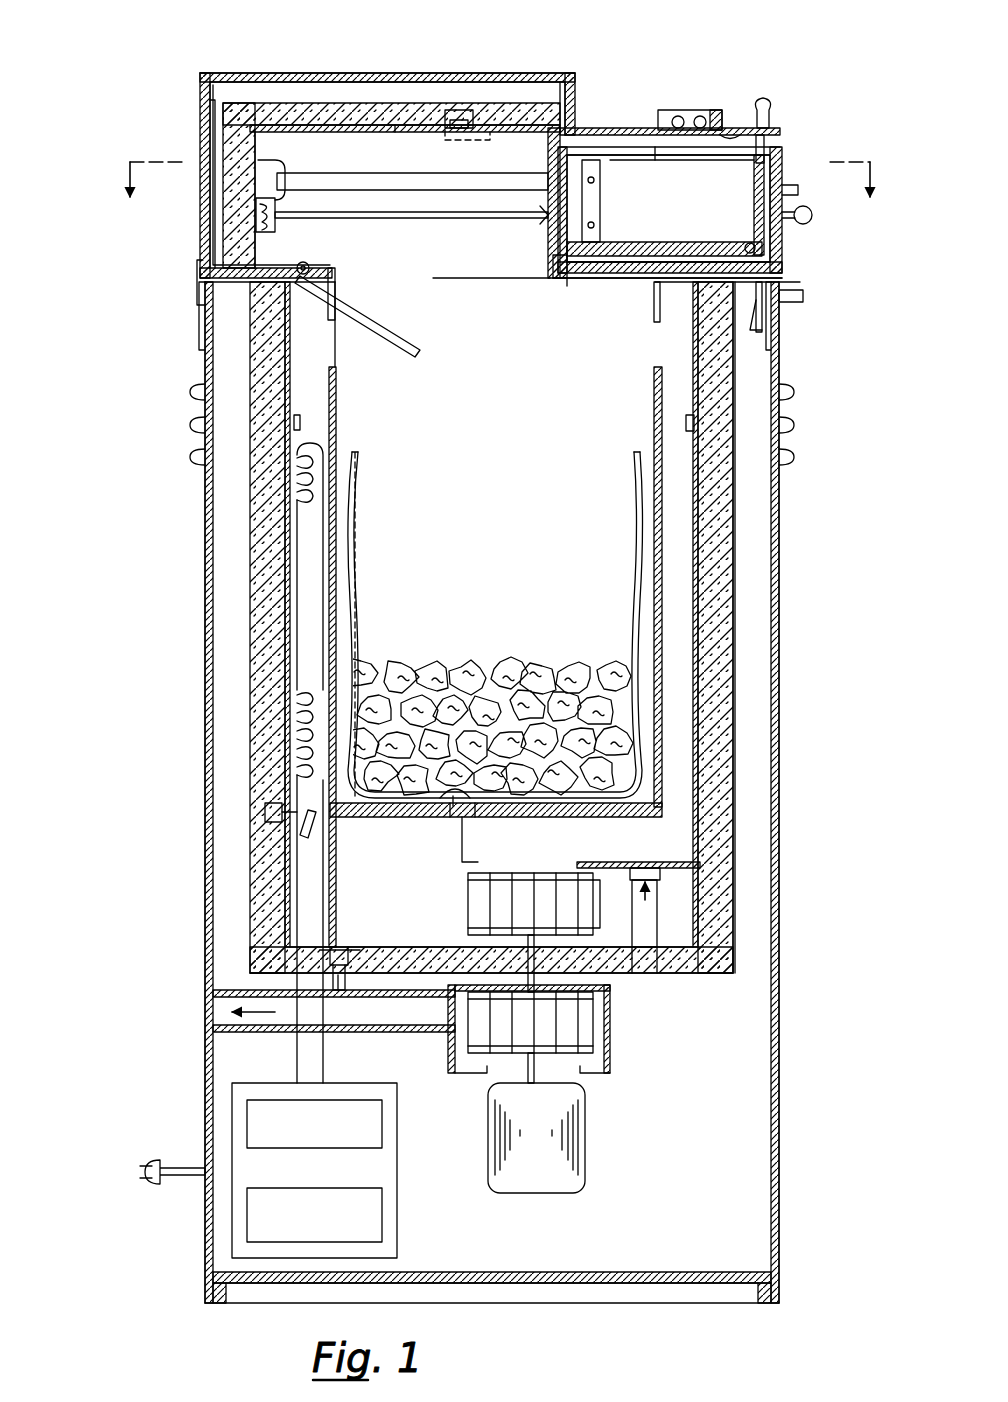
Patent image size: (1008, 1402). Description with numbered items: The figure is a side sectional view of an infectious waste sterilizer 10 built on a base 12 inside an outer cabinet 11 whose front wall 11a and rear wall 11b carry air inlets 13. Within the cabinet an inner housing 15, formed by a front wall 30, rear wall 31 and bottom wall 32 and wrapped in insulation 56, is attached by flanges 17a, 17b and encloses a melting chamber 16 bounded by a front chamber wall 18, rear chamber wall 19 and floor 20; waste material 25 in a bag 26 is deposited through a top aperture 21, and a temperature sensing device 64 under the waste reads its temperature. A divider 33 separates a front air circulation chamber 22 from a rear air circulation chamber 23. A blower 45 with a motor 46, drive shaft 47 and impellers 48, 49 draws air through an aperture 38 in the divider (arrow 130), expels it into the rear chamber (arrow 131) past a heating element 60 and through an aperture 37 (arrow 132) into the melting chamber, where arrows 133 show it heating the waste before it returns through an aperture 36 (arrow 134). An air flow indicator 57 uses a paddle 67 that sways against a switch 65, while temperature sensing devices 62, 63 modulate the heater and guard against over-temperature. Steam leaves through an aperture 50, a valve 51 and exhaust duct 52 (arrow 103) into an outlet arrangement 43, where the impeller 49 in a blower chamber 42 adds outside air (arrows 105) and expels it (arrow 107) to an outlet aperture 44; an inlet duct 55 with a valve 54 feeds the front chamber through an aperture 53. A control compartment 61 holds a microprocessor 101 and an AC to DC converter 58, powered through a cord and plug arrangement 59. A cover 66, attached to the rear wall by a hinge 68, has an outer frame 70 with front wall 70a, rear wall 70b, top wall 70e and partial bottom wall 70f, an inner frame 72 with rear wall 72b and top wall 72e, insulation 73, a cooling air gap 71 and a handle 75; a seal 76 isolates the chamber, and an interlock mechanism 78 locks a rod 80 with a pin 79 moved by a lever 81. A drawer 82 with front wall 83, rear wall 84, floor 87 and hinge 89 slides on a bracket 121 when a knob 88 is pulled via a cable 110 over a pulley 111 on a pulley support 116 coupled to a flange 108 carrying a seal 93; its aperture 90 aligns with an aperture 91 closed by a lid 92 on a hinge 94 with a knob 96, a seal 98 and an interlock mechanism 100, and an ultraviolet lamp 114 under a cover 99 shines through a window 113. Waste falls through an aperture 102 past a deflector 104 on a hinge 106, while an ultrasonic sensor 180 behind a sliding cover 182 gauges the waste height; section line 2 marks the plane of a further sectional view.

The infectious waste sterilizer 10 is at (172, 122).
The outer cabinet 11 is at (783, 618).
The front wall 11a is at (781, 545).
The rear wall 11b is at (204, 658).
The base 12 is at (688, 1290).
The inlets 13 is at (193, 392).
The inner housing 15 is at (692, 362).
The melting chamber 16 is at (486, 418).
The flange 17a is at (785, 338).
The flange 17b is at (199, 335).
The front chamber wall 18 is at (662, 512).
The rear chamber wall 19 is at (336, 435).
The floor 20 is at (480, 815).
The aperture 21 is at (488, 288).
The front air circulation chamber 22 is at (690, 749).
The rear air circulation chamber 23 is at (348, 879).
The waste material 25 is at (500, 660).
The bag 26 is at (356, 550).
The front wall 30 is at (693, 625).
The rear wall 31 is at (270, 575).
The bottom wall 32 is at (392, 948).
The divider 33 is at (598, 860).
The aperture 36 is at (640, 338).
The aperture 37 is at (320, 372).
The aperture 38 is at (514, 870).
The blower chamber 42 is at (600, 1025).
The outlet arrangement 43 is at (441, 1033).
The outlet aperture 44 is at (210, 1000).
The blower 45 is at (587, 1157).
The motor 46 is at (485, 1170).
The drive shaft 47 is at (600, 985).
The impeller 48 is at (598, 912).
The impeller 49 is at (610, 1064).
The aperture 50 is at (340, 945).
The valve 51 is at (348, 948).
The exhaust duct 52 is at (350, 988).
The aperture 53 is at (648, 865).
The valve 54 is at (657, 875).
The inlet duct 55 is at (650, 915).
The insulation 56 is at (737, 800).
The air flow indicator 57 is at (293, 818).
The AC to DC converter 58 is at (332, 1188).
The power cord and plug arrangement 59 is at (172, 1160).
The electrical heating element 60 is at (298, 490).
The control compartment 61 is at (398, 1215).
The temperature sensing device 62 is at (300, 413).
The temperature sensing device 63 is at (688, 432).
The temperature sensing device 64 is at (440, 785).
The switch 65 is at (268, 803).
The cover 66 is at (385, 70).
The paddle 67 is at (312, 825).
The hinge 68 is at (200, 275).
The outer frame 70 is at (222, 72).
The front wall 70a is at (782, 258).
The rear wall 70b is at (205, 208).
The top wall 70e is at (550, 78).
The partial bottom wall 70f is at (620, 285).
The air gap 71 is at (224, 100).
The inner frame 72 is at (308, 122).
The rear wall 72b is at (270, 145).
The top wall 72e is at (352, 122).
The insulation 73 is at (270, 100).
The handle 75 is at (798, 188).
The seal 76 is at (312, 270).
The interlock mechanism 78 is at (757, 300).
The pin 79 is at (800, 285).
The extending rod 80 is at (758, 335).
The interlock lever 81 is at (805, 296).
The drawer 82 is at (668, 208).
The front wall 83 is at (752, 200).
The rear wall 84 is at (600, 195).
The floor 87 is at (635, 255).
The knob 88 is at (803, 225).
The hinge 89 is at (745, 245).
The aperture 90 is at (690, 160).
The aperture 91 is at (640, 147).
The lid 92 is at (770, 135).
The seal 93 is at (565, 285).
The hinge 94 is at (590, 128).
The knob 96 is at (763, 96).
The seal 98 is at (610, 125).
The cover 99 is at (680, 108).
The interlock mechanism 100 is at (782, 165).
The microprocessor 101 is at (268, 1150).
The aperture 102 is at (455, 266).
The arrow 103 is at (318, 1021).
The deflector 104 is at (415, 292).
The arrows 105 is at (483, 1078).
The hinge 106 is at (320, 262).
The arrow 107 is at (397, 1012).
The flange 108 is at (548, 150).
The cable 110 is at (488, 212).
The pulley 111 is at (278, 220).
The window 113 is at (738, 130).
The ultraviolet lamp 114 is at (713, 108).
The pulley support 116 is at (271, 170).
The bracket 121 is at (344, 182).
The arrow 130 is at (580, 856).
The arrow 131 is at (420, 868).
The arrow 132 is at (336, 365).
The arrows 133 is at (441, 619).
The arrow 134 is at (678, 379).
The ultrasonic sensor 180 is at (455, 108).
The sliding cover 182 is at (425, 130).
The section line 2- 2 is at (499, 194).